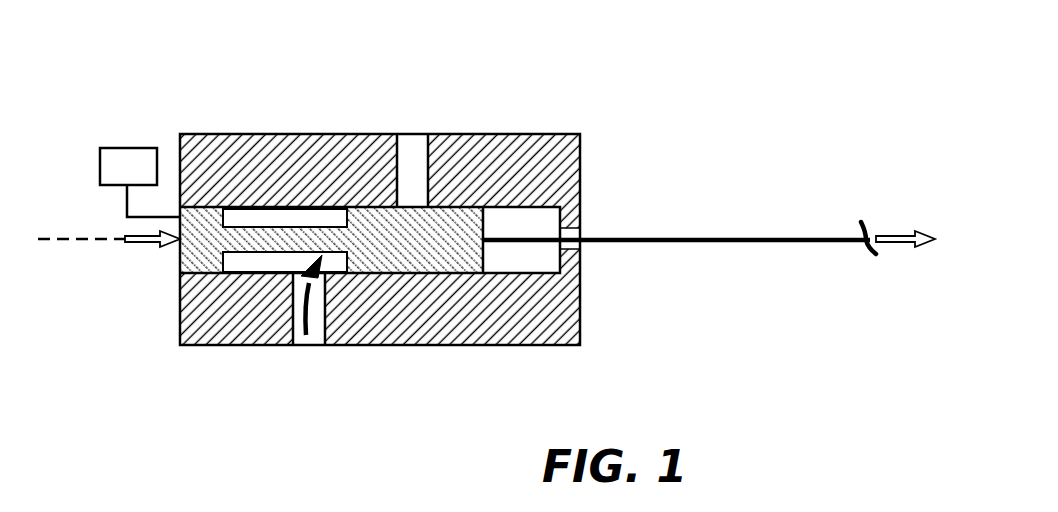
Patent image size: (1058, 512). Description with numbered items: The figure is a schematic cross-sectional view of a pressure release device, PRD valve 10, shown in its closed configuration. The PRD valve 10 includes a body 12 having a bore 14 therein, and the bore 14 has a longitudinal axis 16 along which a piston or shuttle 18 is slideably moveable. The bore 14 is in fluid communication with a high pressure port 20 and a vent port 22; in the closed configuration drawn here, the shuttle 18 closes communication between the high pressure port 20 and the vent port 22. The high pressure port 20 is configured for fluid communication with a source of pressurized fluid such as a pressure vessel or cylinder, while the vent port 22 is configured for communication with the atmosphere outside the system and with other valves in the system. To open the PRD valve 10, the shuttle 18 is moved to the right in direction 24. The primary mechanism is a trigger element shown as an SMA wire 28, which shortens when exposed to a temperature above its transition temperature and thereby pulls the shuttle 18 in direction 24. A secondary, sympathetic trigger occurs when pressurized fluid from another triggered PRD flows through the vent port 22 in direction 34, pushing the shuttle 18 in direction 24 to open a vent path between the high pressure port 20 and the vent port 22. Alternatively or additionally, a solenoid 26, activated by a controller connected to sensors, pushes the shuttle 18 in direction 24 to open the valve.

The PRD valve 10 is at (588, 80).
The body 12 is at (312, 135).
The bore 14 is at (261, 214).
The longitudinal axis 16 is at (85, 237).
The shuttle 18 is at (434, 240).
The high pressure port 20 is at (413, 145).
The vent port 22 is at (315, 340).
The direction 24 is at (143, 243).
The solenoid 26 is at (140, 182).
The SMA wire 28 is at (738, 244).
The direction 34 is at (309, 285).